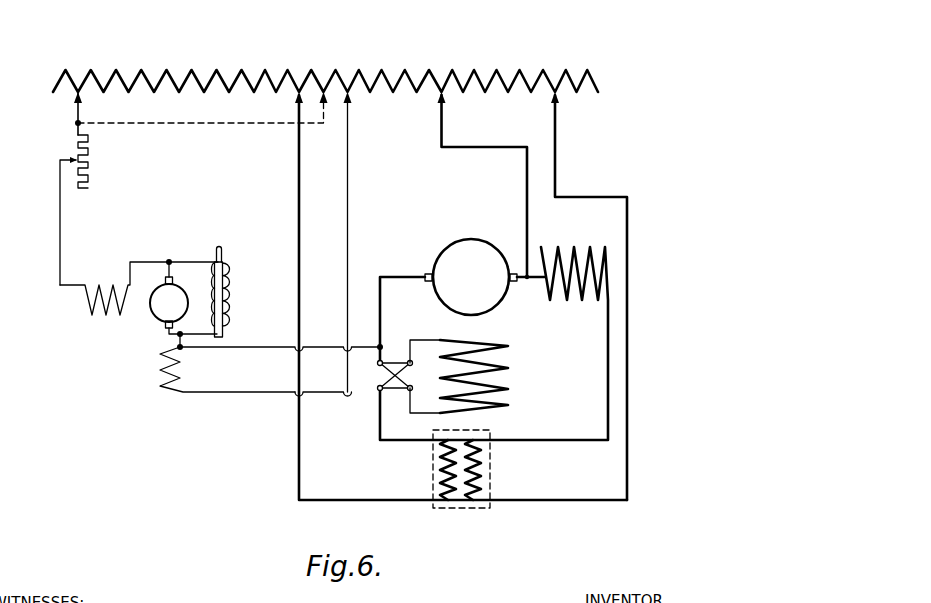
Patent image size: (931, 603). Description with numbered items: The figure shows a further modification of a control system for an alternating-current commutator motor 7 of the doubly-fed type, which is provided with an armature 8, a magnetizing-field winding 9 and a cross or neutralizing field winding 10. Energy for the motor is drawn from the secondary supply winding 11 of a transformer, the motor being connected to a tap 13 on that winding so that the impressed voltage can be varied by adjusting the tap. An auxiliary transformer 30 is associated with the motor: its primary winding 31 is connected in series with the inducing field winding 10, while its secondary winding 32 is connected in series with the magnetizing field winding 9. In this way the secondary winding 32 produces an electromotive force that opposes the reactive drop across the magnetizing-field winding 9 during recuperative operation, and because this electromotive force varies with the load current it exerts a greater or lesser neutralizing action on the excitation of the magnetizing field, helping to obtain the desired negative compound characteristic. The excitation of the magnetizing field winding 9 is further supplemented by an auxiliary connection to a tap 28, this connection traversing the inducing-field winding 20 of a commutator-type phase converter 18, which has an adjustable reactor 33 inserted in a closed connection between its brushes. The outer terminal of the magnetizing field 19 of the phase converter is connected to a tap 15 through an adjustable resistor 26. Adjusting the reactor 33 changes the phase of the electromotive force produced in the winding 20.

The alternating-current motor 7 is at (528, 333).
The armature 8 is at (470, 246).
The magnetizing-field winding 9 is at (510, 370).
The cross or neutralizing field winding 10 is at (584, 300).
The secondary winding 11 is at (359, 72).
The tap 13 is at (557, 117).
The tap 15 is at (81, 110).
The phase-converter 18 is at (144, 347).
The magnetizing-field winding 19 is at (139, 304).
The cross-field winding 20 is at (184, 368).
The adjustable resistor 26 is at (90, 155).
The tap 28 is at (350, 118).
The auxiliary transformer 30 is at (458, 490).
The primary winding 31 is at (486, 468).
The secondary winding 32 is at (437, 468).
The adjustable reactor 33 is at (231, 283).